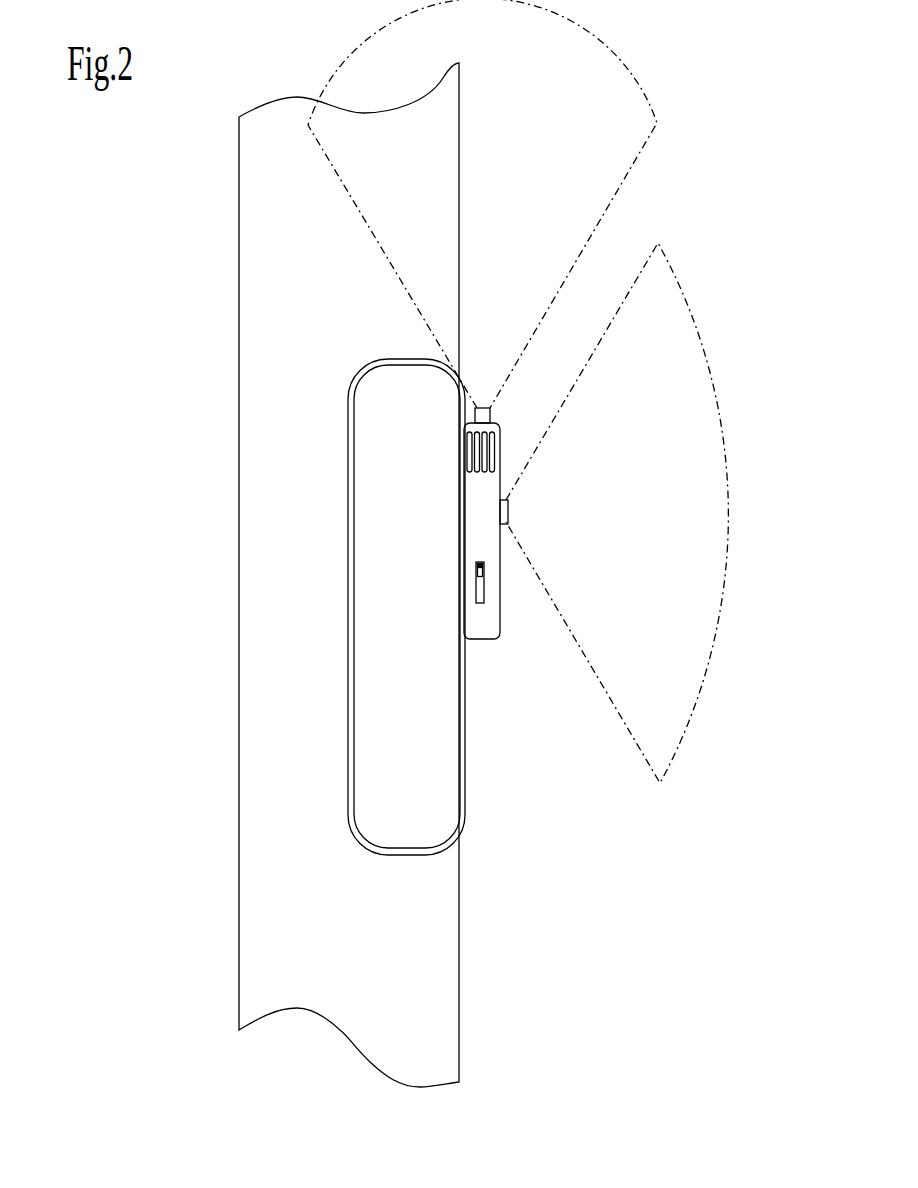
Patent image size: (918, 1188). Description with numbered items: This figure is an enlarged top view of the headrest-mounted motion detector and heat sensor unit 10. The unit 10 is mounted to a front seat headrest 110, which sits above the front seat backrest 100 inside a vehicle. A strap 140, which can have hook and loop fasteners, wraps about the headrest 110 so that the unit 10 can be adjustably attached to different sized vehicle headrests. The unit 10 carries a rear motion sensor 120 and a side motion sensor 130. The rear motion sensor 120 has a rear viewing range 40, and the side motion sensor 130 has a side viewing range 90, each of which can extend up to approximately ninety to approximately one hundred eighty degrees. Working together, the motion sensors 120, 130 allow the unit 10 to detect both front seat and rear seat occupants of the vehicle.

The motion detector and heat sensor unit 10 is at (487, 618).
The rear viewing range 40 is at (683, 290).
The side viewing range 90 is at (332, 165).
The front seat backrest 100 is at (265, 432).
The headrest 110 is at (387, 685).
The rear motion sensor 120 is at (504, 515).
The side motion sensor 130 is at (482, 408).
The strap 140 is at (458, 822).